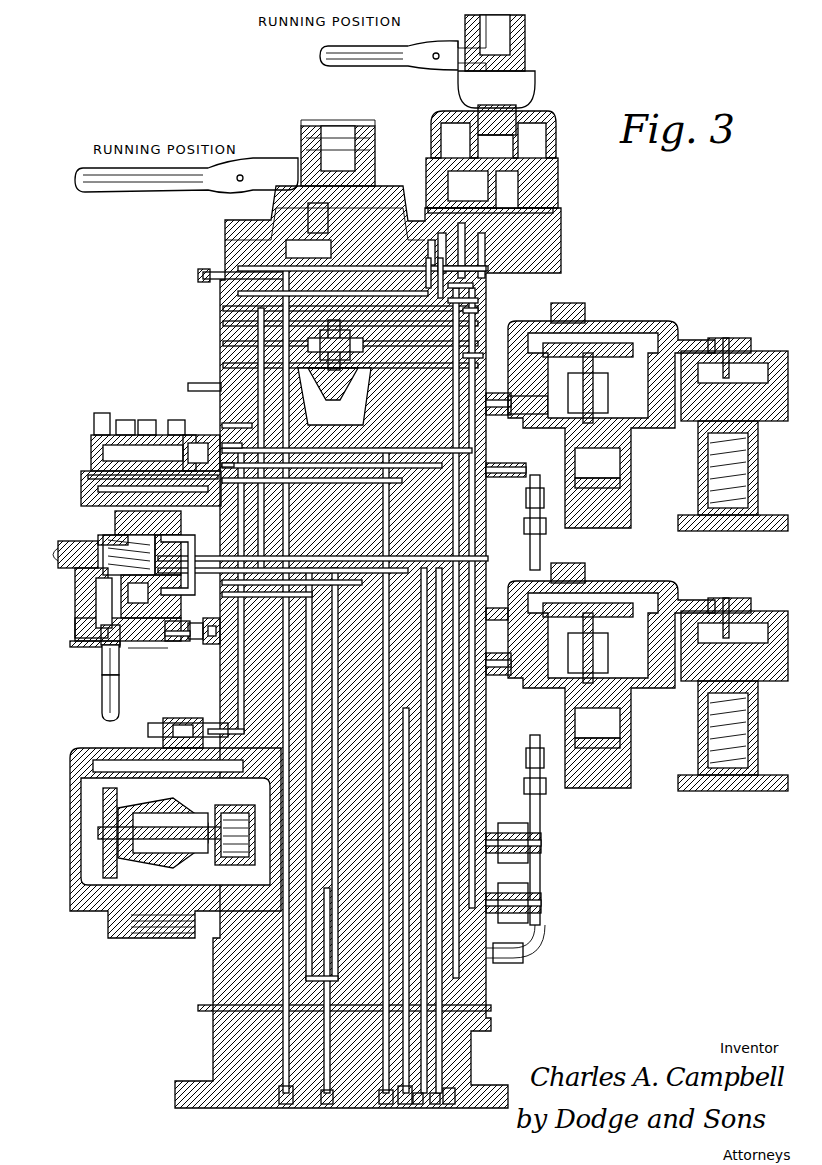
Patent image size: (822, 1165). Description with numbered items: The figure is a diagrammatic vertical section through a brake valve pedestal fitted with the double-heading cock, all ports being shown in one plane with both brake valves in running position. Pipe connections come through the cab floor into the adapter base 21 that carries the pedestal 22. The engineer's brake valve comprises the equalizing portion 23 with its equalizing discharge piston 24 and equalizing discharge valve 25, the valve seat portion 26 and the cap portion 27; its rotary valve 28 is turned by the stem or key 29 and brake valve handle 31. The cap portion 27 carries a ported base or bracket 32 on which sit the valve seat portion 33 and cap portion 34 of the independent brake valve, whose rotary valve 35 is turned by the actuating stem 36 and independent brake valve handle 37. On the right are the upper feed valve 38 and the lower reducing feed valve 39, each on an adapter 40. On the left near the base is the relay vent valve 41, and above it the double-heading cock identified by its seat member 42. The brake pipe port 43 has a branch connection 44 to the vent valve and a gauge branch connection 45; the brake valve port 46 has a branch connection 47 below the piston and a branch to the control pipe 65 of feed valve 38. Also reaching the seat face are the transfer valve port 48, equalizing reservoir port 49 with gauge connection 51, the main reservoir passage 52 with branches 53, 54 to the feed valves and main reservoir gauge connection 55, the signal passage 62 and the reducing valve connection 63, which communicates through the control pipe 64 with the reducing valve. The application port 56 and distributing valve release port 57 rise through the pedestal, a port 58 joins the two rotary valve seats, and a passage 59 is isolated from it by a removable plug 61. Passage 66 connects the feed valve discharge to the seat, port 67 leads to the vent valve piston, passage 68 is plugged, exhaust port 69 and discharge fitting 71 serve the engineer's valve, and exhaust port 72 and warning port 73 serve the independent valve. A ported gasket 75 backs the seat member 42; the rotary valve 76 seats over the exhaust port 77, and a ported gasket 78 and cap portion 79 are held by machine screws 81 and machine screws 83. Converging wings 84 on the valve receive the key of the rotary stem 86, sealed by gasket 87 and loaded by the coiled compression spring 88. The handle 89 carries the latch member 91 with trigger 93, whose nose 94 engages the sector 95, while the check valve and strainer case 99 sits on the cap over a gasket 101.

The adapter base 21 is at (205, 1040).
The pedestal 22 is at (206, 950).
The equalizing portion 23 is at (215, 320).
The equalizing discharge piston 24 is at (218, 341).
The equalizing discharge valve 25 is at (320, 395).
The valve seat portion 26 is at (218, 302).
The cap portion 27 is at (221, 218).
The rotary valve 28 is at (395, 228).
The stem or key 29 is at (355, 178).
The brake valve handle 31 is at (118, 185).
The ported base or bracket 32 is at (555, 220).
The valve seat portion 33 is at (552, 187).
The cap portion 34 is at (560, 122).
The rotary valve 35 is at (538, 150).
The actuating stem 36 is at (508, 110).
The independent brake valve handle 37 is at (357, 55).
The feed valve 38 is at (610, 300).
The feed valve 39 is at (610, 560).
The adapter 40 is at (515, 388).
The relay vent valve 41 is at (142, 930).
The seat member 42 is at (200, 636).
The brake pipe port 43 is at (278, 1100).
The branch connection 44 is at (258, 792).
The branch connection 45 is at (145, 712).
The brake valve port 46 is at (240, 470).
The branch connection 47 is at (215, 357).
The transfer valve port 48 is at (318, 1100).
The equalizing reservoir port 49 is at (376, 1100).
The equalizing reservoir gauge connection 51 is at (540, 900).
The main reservoir passage 52 is at (393, 1100).
The branch 53 is at (490, 382).
The branch 54 is at (488, 653).
The main reservoir gauge connection 55 is at (540, 838).
The application port 56 is at (410, 1100).
The distributing valve release port 57 is at (432, 1100).
The port 58 is at (420, 200).
The passage 59 is at (470, 305).
The removable plug 61 is at (470, 292).
The signal passage 62 is at (440, 1065).
The reducing valve connection 63 is at (460, 596).
The control pipe 64 is at (532, 805).
The control pipe 65 is at (534, 538).
The passage 66 is at (245, 450).
The port 67 is at (470, 348).
The passage 68 is at (200, 282).
The exhaust port 69 is at (310, 250).
The discharge fitting 71 is at (180, 378).
The exhaust port 72 is at (483, 258).
The warning port 73 is at (525, 258).
The ported gasket 75 is at (216, 458).
The rotary valve 76 is at (118, 595).
The exhaust port 77 is at (205, 636).
The ported gasket 78 is at (168, 633).
The cap portion 79 is at (150, 630).
The machine screws 81 is at (186, 632).
The machine screws 83 is at (157, 635).
The converging wings 84 is at (138, 538).
The rotary stem 86 is at (68, 585).
The gasket 87 is at (100, 528).
The coiled compression spring 88 is at (65, 557).
The handle 89 is at (94, 700).
The latch member 91 is at (96, 660).
The trigger 93 is at (78, 640).
The nose 94 is at (112, 630).
The sector 95 is at (90, 612).
The check valve and strainer case 99 is at (75, 488).
The gasket 101 is at (80, 468).